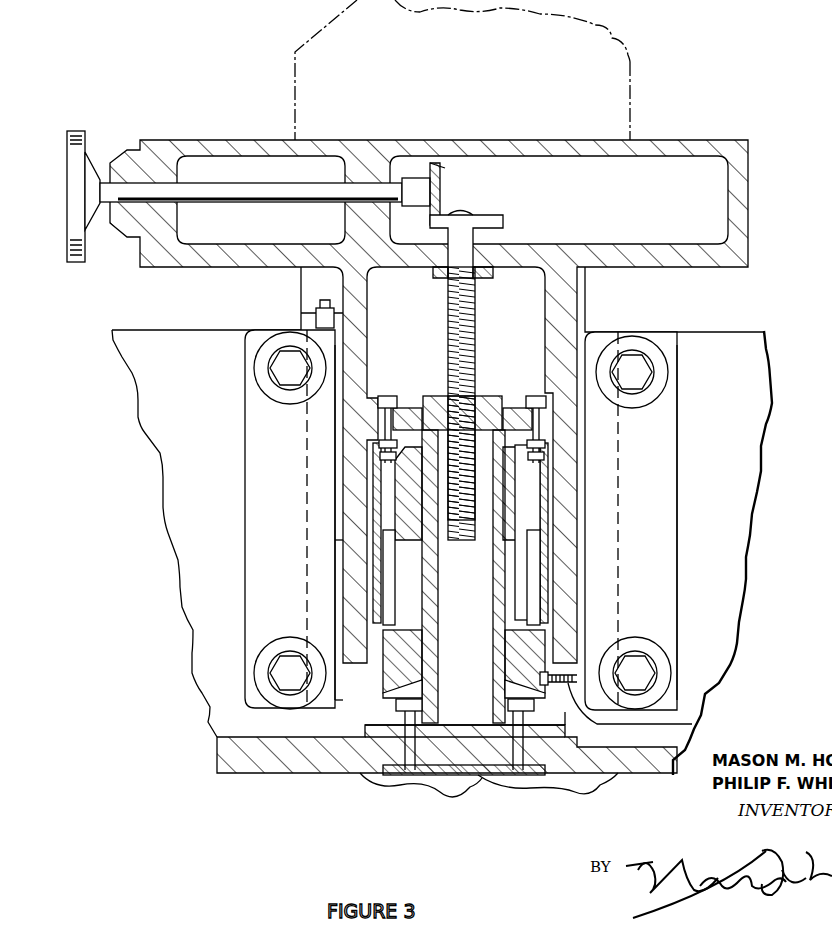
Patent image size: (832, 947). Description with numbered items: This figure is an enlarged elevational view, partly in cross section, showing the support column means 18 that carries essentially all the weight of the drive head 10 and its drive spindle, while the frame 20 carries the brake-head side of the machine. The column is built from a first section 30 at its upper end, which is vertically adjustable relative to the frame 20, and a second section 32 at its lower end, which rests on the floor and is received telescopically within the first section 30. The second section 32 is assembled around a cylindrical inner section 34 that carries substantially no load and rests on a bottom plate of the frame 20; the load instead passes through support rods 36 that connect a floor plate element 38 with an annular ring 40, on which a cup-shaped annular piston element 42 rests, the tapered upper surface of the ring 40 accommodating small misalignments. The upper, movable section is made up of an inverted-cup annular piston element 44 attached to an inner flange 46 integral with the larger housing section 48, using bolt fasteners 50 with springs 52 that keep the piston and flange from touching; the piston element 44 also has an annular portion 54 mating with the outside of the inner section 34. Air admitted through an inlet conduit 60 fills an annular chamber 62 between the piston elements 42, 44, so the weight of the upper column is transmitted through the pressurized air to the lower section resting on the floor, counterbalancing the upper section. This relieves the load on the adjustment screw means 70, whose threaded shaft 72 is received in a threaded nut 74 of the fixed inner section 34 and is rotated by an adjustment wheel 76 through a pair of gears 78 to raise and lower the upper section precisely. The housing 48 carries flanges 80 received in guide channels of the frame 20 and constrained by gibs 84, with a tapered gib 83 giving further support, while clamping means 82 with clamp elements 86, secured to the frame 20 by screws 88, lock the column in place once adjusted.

The drive head 10 is at (605, 98).
The support column means 18 is at (756, 194).
The frame 20 is at (235, 758).
The first section 30 is at (588, 322).
The second section 32 is at (356, 700).
The cylindrical inner section 34 is at (490, 732).
The support rods 36 is at (395, 772).
The floor plate element 38 is at (450, 775).
The annular ring 40 is at (567, 707).
The annular piston element 42 is at (410, 652).
The annular piston element 44 is at (380, 512).
The inner flange 46 is at (412, 406).
The housing section 48 is at (352, 306).
The bolt fasteners 50 is at (388, 394).
The springs 52 is at (386, 444).
The annular portion 54 is at (510, 520).
The inlet conduit 60 is at (690, 723).
The annular chamber 62 is at (525, 572).
The adjustment screw means 70 is at (512, 224).
The threaded shaft 72 is at (471, 340).
The threaded nut 74 is at (444, 400).
The adjustment wheel 76 is at (72, 228).
The gears 78 is at (442, 194).
The flanges 80 is at (322, 574).
The clamping means 82 is at (230, 454).
The tapered gib 83 is at (340, 540).
The gibs 84 is at (250, 498).
The clamp elements 86 is at (258, 370).
The screws 88 is at (288, 372).